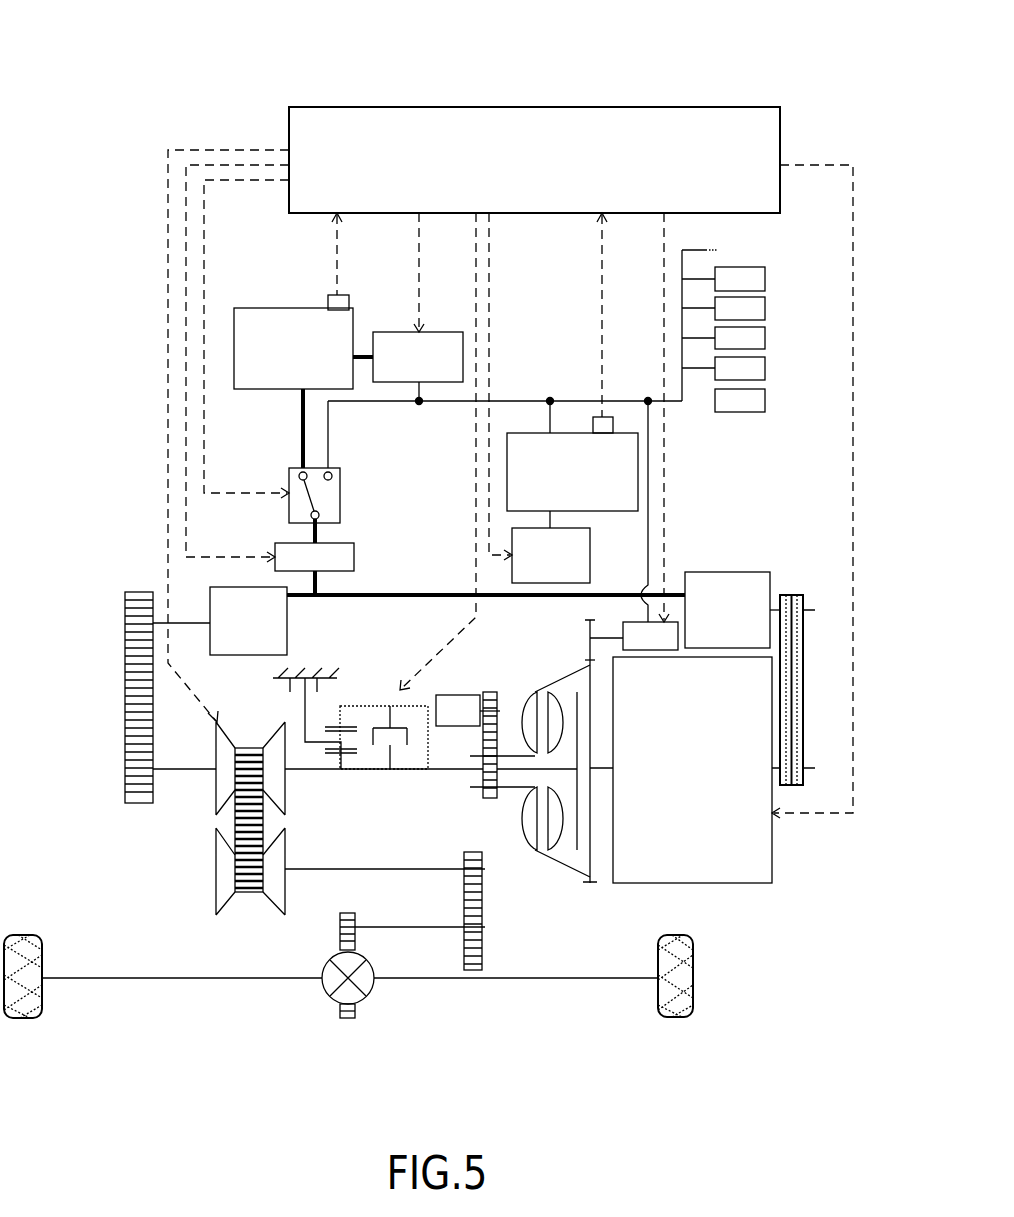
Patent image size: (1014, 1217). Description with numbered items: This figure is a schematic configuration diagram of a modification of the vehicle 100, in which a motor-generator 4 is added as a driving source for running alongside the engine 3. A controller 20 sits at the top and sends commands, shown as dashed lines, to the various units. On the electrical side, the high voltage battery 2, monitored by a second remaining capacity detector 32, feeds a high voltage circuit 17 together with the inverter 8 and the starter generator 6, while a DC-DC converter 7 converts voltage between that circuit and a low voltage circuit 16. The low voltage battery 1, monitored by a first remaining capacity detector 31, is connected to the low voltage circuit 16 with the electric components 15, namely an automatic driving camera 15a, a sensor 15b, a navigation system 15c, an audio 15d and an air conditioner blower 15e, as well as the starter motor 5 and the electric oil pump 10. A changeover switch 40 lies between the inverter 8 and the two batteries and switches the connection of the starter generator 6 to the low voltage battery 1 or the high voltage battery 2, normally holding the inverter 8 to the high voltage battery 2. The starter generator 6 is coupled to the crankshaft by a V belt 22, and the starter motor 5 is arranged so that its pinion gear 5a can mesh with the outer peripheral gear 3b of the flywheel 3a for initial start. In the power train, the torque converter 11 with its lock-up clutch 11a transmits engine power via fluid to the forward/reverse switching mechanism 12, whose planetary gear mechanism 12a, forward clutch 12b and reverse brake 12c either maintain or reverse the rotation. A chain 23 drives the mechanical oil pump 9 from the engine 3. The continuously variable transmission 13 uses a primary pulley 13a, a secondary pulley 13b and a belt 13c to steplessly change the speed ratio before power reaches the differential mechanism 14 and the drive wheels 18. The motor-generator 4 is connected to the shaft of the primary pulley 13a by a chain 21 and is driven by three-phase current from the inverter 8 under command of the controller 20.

The vehicle 100 is at (102, 84).
The controller 20 is at (733, 107).
The high voltage battery 2 is at (248, 308).
The second remaining capacity detector 32 is at (328, 302).
The DC-DC converter 7 is at (380, 334).
The low voltage circuit 16 is at (574, 399).
The changeover switch 40 is at (340, 493).
The inverter 8 is at (354, 555).
The high voltage circuit 17 is at (443, 593).
The motor-generator 4 is at (240, 655).
The chain 21 is at (140, 803).
The continuously variable transmission 13 is at (250, 823).
The primary pulley 13a is at (278, 737).
The secondary pulley 13b is at (285, 885).
The belt 13c is at (248, 892).
The forward/reverse switching mechanism 12 is at (360, 750).
The planetary gear mechanism 12a is at (321, 764).
The forward clutch 12b is at (407, 750).
The reverse brake 12c is at (324, 690).
The mechanical oil pump 9 is at (470, 695).
The chain 23 is at (489, 692).
The torque converter 11 is at (531, 700).
The lock-up clutch 11a is at (555, 845).
The engine 3 is at (752, 883).
The flywheel 3a is at (590, 847).
The outer peripheral gear 3b is at (589, 665).
The starter motor 5 is at (621, 630).
The pinion gear 5a is at (588, 656).
The starter generator 6 is at (732, 572).
The V belt 22 is at (790, 595).
The low voltage battery 1 is at (527, 435).
The first remaining capacity detector 31 is at (613, 426).
The electric oil pump 10 is at (590, 553).
The electric components 15 is at (765, 325).
The automatic driving camera 15a is at (765, 279).
The sensor 15b is at (765, 308).
The navigation system 15c is at (765, 338).
The audio 15d is at (765, 368).
The air conditioner blower 15e is at (760, 401).
The differential mechanism 14 is at (358, 998).
The drive wheels 18 is at (22, 1018).